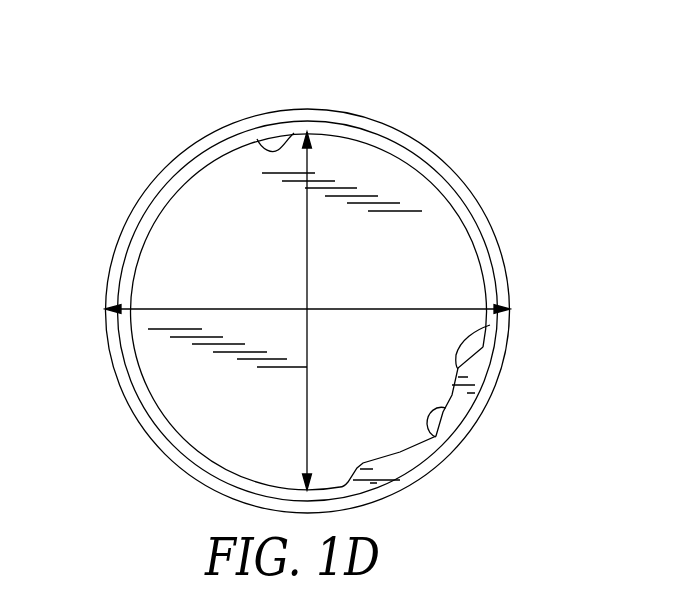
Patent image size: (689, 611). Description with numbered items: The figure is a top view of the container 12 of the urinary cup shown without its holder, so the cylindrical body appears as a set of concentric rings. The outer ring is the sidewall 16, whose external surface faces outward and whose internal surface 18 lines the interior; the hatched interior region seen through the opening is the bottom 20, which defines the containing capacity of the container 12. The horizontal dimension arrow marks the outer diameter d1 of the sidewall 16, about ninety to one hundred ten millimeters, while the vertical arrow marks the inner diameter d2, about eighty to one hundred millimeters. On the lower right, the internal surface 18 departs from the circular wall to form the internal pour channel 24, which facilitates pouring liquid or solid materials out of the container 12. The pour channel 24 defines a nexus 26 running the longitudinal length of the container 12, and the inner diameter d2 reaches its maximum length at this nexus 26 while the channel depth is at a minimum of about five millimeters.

The container 12 is at (107, 272).
The sidewall 16 is at (278, 111).
The internal surface 18 is at (258, 138).
The bottom 20 is at (197, 233).
The internal pour channel 24 is at (488, 326).
The nexus 26 is at (441, 408).
The outer diameter d1 is at (352, 308).
The inner diameter d2 is at (305, 243).